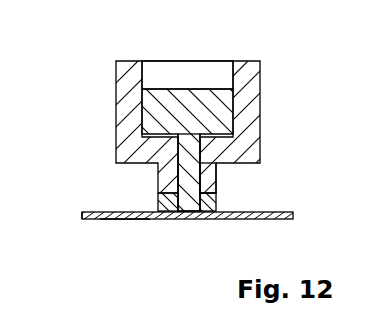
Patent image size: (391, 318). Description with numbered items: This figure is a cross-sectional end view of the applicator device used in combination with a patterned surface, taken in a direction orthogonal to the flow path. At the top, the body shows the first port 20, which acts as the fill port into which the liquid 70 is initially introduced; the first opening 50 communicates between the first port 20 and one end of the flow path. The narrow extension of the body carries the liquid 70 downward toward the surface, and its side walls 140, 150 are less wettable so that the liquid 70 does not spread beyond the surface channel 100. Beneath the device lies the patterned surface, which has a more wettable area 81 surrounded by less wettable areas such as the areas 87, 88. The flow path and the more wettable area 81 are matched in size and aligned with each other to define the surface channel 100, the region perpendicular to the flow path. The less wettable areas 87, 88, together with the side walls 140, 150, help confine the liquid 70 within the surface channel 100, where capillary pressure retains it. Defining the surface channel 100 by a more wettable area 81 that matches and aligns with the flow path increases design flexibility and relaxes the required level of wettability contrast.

The first port 20 is at (182, 67).
The first opening 50 is at (165, 149).
The liquid 70 is at (225, 107).
The more wettable area 81 is at (125, 222).
The less wettable area 87 is at (82, 222).
The less wettable area 88 is at (272, 213).
The surface channel 100 is at (193, 222).
The side wall 140 is at (155, 197).
The side wall 150 is at (217, 180).